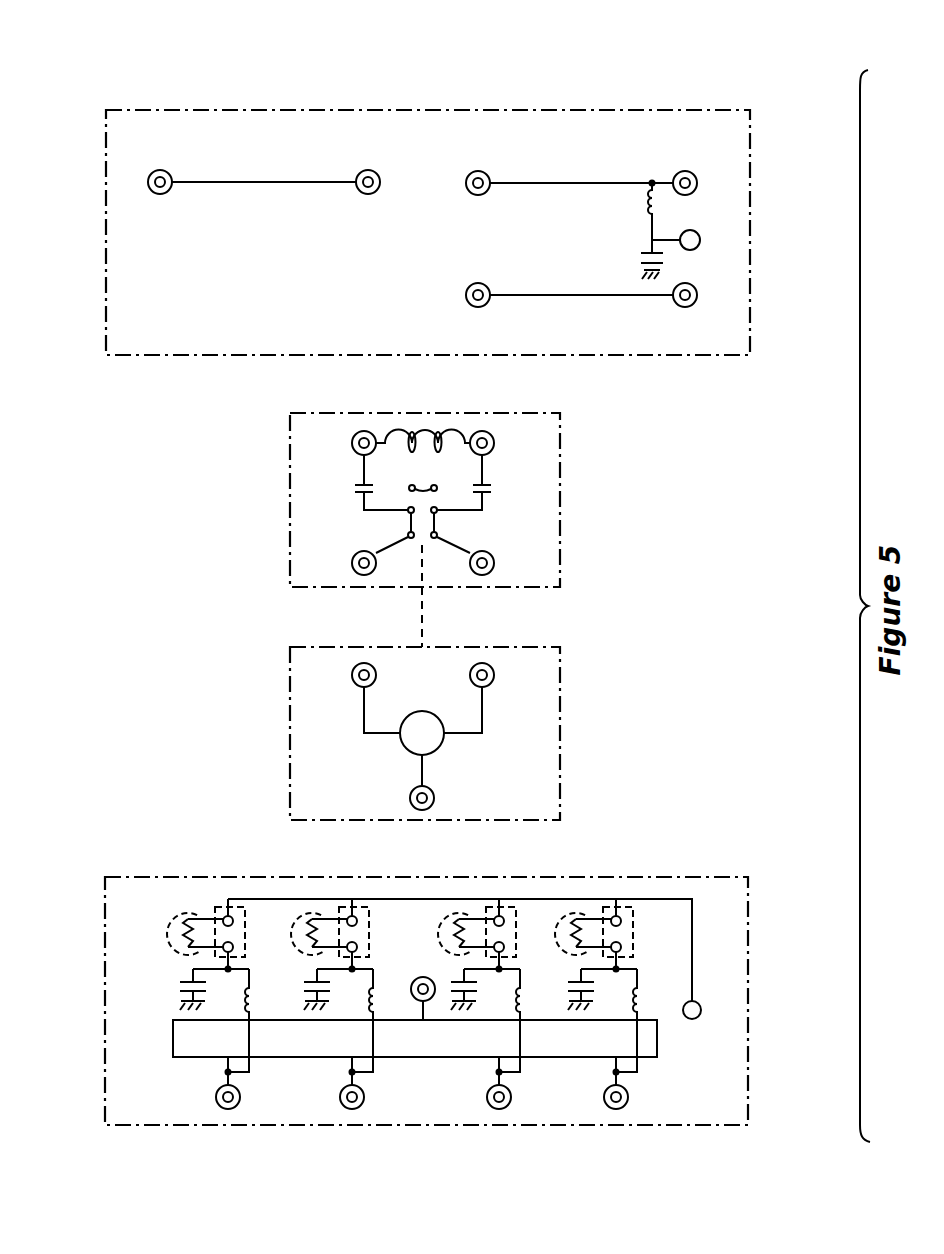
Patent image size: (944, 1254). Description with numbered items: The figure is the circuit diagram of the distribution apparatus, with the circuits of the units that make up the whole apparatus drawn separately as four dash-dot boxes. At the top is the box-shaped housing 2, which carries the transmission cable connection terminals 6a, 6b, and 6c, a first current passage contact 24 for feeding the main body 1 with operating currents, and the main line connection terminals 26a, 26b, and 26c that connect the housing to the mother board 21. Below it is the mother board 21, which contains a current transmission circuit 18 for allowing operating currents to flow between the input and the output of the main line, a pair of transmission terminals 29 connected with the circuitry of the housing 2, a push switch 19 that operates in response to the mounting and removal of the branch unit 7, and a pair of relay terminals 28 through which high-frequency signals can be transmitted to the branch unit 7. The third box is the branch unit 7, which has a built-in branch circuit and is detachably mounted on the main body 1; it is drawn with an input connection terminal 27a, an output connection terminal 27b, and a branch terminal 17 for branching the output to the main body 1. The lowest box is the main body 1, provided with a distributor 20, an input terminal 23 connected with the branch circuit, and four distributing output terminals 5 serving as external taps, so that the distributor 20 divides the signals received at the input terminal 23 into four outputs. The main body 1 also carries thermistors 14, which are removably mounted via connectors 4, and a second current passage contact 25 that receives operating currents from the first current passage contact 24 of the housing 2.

The main body 1 is at (718, 1112).
The box-shaped housing 2 is at (427, 108).
The connectors 4 is at (240, 905).
The distributing output terminals 5 is at (229, 1109).
The transmission cable connection terminal 6a is at (162, 170).
The transmission cable connection terminal 6b is at (690, 171).
The transmission cable connection terminal 6c is at (697, 295).
The branch unit 7 is at (300, 763).
The thermistors 14 is at (176, 937).
The branch terminal 17 is at (433, 797).
The current transmission circuit 18 is at (433, 413).
The push switch 19 is at (427, 502).
The distributor 20 is at (180, 1036).
The mother board 21 is at (288, 422).
The input terminal 23 is at (413, 996).
The first current passage contact 24 is at (700, 238).
The second current passage contact 25 is at (702, 1005).
The main line connection terminal 26a is at (368, 170).
The main line connection terminal 26b is at (487, 177).
The main line connection terminal 26c is at (483, 307).
The input connection terminal 27a is at (352, 677).
The output connection terminal 27b is at (494, 672).
The relay terminals 28 is at (352, 567).
The transmission terminals 29 is at (352, 443).